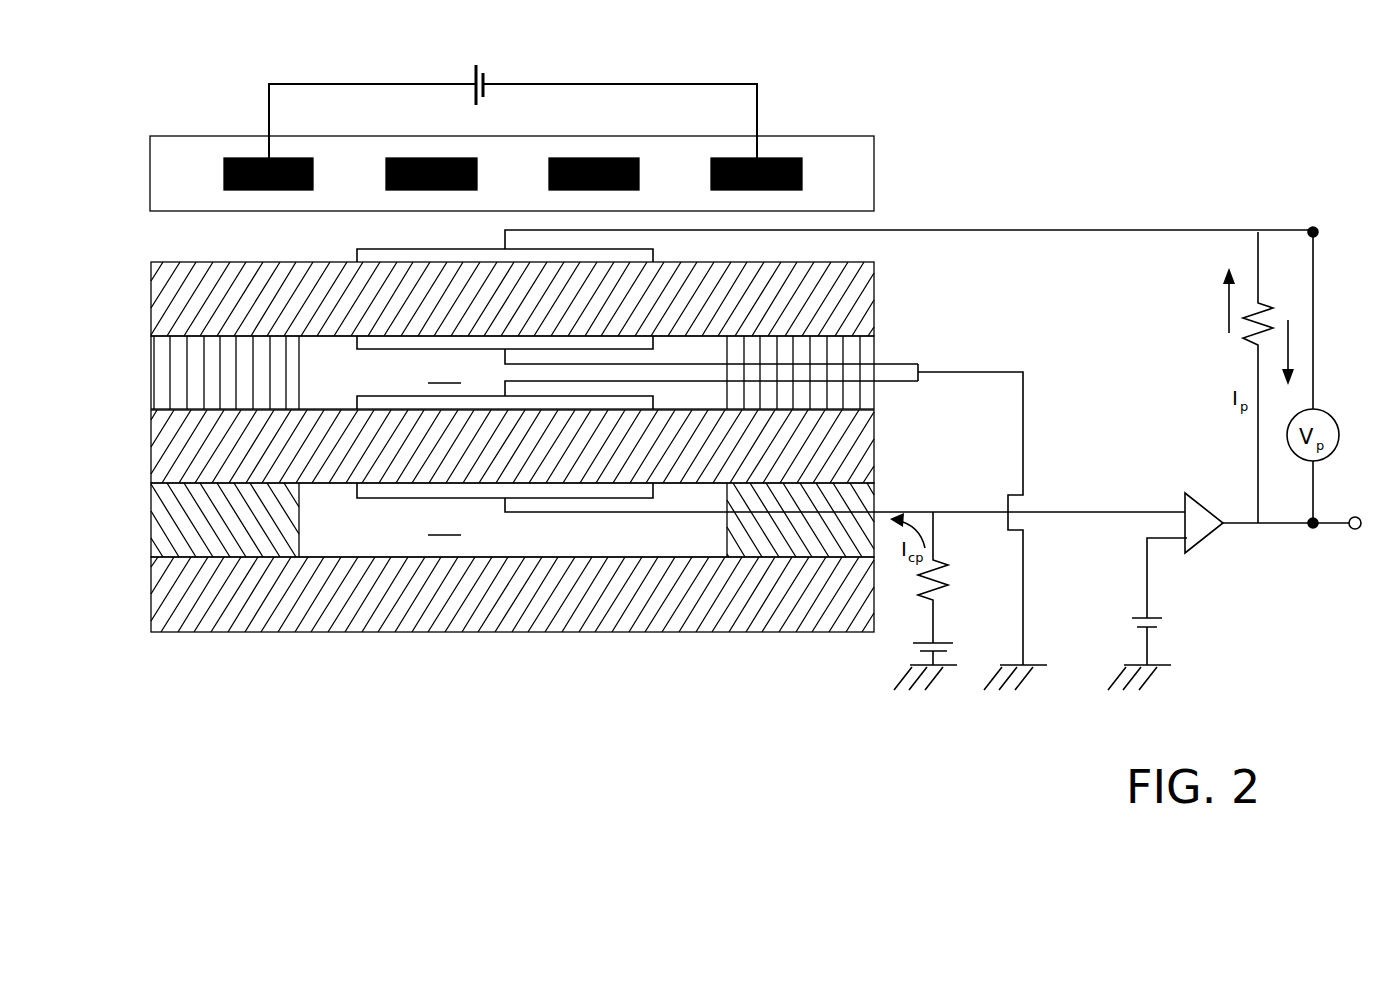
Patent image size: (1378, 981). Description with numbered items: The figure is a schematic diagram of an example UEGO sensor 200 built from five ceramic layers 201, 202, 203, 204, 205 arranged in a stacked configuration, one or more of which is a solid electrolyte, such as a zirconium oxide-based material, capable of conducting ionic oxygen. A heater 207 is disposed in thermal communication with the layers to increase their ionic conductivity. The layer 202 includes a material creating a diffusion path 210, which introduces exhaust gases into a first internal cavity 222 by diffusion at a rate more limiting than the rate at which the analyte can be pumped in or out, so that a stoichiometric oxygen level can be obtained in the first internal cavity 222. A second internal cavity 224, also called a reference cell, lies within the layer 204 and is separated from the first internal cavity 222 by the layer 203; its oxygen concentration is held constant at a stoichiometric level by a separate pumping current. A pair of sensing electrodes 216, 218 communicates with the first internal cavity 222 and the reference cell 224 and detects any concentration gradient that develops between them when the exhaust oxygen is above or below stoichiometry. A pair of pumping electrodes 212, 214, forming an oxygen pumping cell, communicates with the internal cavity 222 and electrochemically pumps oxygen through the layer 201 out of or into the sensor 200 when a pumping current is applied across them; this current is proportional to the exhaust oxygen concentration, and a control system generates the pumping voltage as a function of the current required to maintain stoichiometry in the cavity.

The UEGO sensor 200 is at (866, 68).
The heater 207 is at (224, 163).
The layer 201 is at (150, 275).
The layer 202 is at (467, 355).
The layer 203 is at (150, 472).
The layer 204 is at (150, 547).
The layer 205 is at (150, 620).
The diffusion path 210 is at (187, 389).
The pumping electrode 212 is at (357, 249).
The pumping electrode 214 is at (357, 349).
The sensing electrode 216 is at (357, 396).
The sensing electrode 218 is at (357, 498).
The first internal cavity 222 is at (444, 373).
The second internal cavity 224 is at (444, 525).